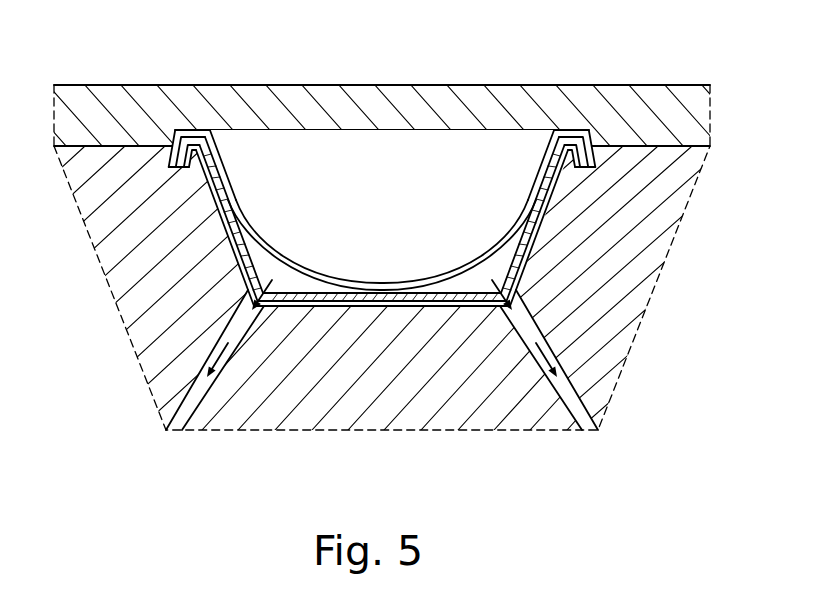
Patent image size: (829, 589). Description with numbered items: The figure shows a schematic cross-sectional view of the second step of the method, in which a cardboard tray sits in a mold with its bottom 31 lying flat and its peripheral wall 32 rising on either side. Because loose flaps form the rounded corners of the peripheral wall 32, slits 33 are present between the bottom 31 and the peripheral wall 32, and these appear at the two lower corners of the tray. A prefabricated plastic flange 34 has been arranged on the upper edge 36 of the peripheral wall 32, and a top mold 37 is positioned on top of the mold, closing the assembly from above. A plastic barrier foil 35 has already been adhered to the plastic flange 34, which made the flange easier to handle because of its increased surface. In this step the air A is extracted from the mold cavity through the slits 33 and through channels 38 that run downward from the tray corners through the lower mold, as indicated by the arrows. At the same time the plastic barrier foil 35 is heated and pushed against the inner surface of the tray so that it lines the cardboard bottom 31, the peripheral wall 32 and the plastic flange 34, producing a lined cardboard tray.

The bottom 31 is at (378, 297).
The peripheral wall 32 is at (233, 213).
The slits 33 is at (264, 296).
The plastic flange 34 is at (188, 140).
The barrier foil 35 is at (310, 277).
The upper edge 36 is at (178, 150).
The top mold 37 is at (113, 97).
The channels 38 is at (200, 396).
The air A is at (223, 345).